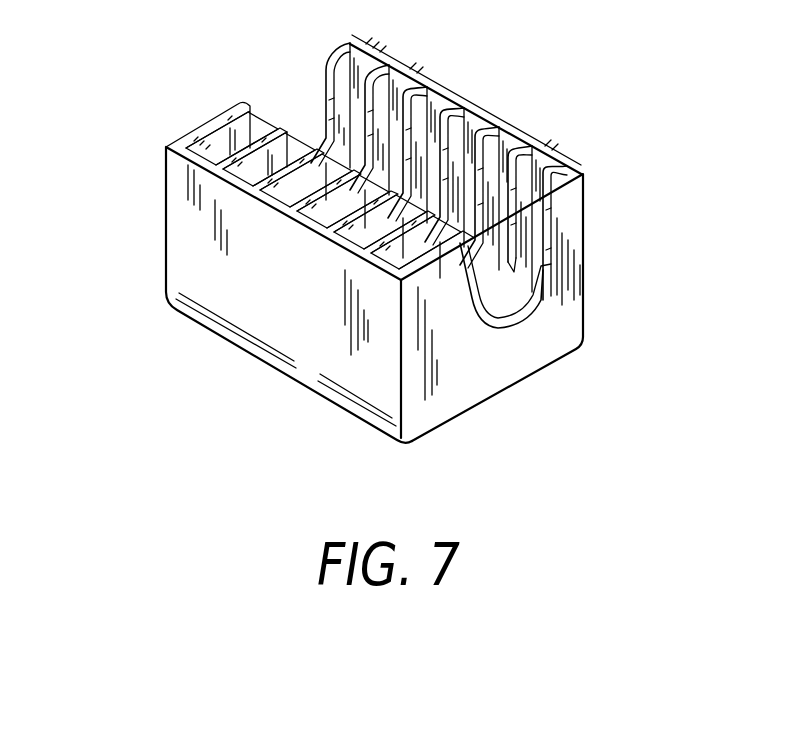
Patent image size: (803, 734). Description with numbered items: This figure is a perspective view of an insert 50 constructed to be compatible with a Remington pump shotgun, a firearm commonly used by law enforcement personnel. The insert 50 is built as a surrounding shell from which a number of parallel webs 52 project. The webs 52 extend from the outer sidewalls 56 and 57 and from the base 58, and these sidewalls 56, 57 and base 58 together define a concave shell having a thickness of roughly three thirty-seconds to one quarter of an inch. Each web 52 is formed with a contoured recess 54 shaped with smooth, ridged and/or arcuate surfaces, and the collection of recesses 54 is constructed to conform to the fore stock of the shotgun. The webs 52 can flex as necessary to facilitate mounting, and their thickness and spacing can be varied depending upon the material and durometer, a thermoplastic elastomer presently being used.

The insert 50 is at (357, 231).
The webs 52 is at (393, 110).
The recess 54 is at (540, 270).
The outer sidewall 56 is at (423, 82).
The outer sidewall 57 is at (180, 213).
The base 58 is at (503, 403).